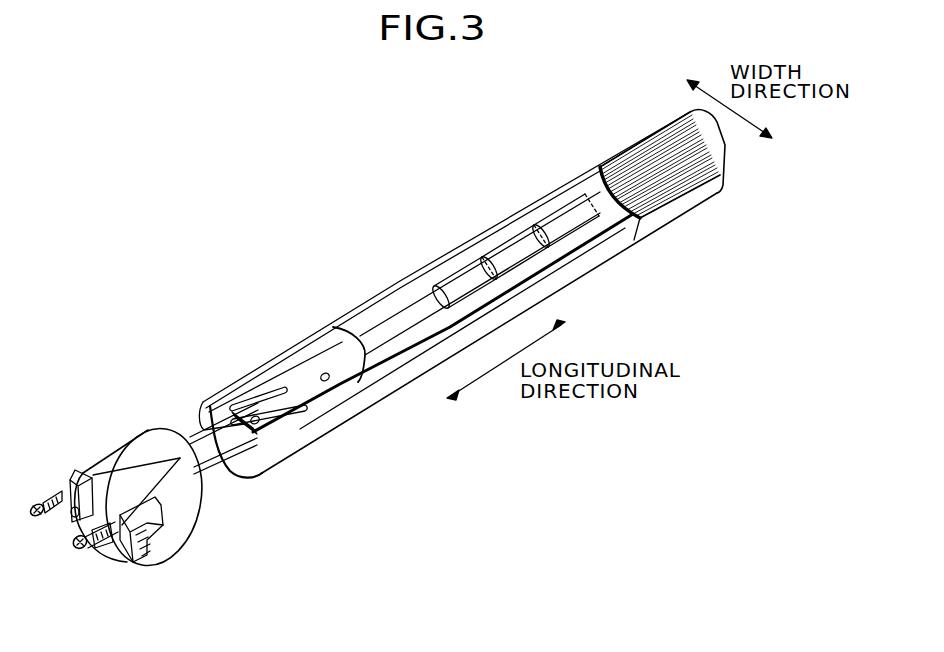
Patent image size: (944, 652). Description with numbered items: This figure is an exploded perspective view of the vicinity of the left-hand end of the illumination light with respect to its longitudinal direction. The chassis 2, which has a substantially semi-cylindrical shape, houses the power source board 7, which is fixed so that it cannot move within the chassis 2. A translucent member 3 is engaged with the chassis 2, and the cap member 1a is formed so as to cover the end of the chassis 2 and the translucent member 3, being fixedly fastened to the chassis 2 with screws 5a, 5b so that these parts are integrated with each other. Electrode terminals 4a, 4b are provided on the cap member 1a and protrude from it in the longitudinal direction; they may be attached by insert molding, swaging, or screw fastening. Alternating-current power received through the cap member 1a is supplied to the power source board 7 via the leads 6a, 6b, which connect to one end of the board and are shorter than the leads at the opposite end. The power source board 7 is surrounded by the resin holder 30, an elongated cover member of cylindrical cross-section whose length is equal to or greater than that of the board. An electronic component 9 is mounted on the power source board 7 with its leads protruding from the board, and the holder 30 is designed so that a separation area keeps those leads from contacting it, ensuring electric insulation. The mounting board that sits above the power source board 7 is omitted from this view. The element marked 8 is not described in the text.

The cap member 1a is at (108, 468).
The chassis 2 is at (633, 150).
The translucent member 3 is at (604, 257).
The electrode terminal 4a is at (80, 490).
The electrode terminal 4b is at (128, 538).
The screw 5a is at (43, 499).
The screw 5b is at (96, 548).
The lead 6a is at (208, 430).
The lead 6b is at (213, 470).
The power source board 7 is at (308, 352).
The rail plate 8 is at (264, 385).
The electronic component 9 is at (522, 216).
The holder 30 is at (372, 302).